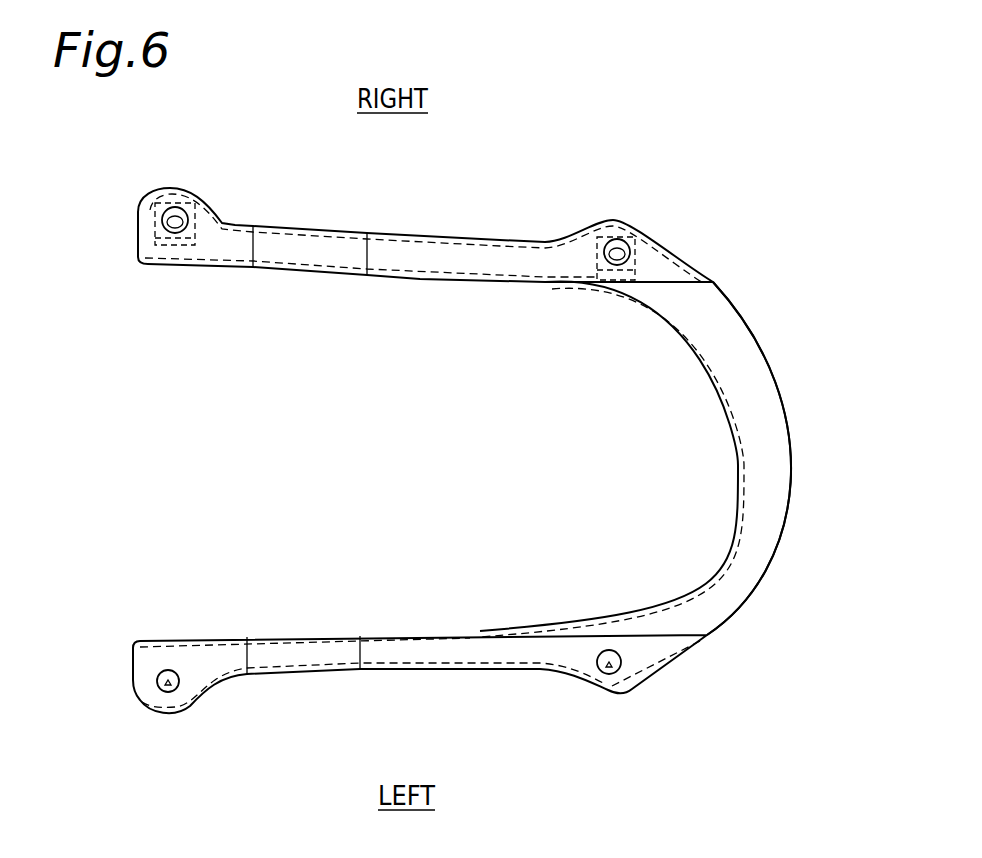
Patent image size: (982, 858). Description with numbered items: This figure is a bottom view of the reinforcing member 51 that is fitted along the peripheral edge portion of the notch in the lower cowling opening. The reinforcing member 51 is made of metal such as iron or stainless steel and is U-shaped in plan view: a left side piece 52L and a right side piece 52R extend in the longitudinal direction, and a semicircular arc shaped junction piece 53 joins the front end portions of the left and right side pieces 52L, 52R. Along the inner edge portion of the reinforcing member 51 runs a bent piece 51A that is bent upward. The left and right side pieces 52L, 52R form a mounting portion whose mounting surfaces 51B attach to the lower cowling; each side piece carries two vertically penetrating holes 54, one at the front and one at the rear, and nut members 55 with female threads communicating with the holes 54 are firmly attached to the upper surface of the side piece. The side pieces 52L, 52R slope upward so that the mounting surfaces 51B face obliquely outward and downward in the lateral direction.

The reinforcing member 51 is at (697, 190).
The bent piece 51A is at (690, 333).
The mounting surface 51B is at (383, 243).
The right side piece 52R is at (455, 240).
The left side piece 52L is at (460, 656).
The junction piece 53 is at (757, 350).
The hole 54 is at (178, 210).
The nut member 55 is at (196, 233).